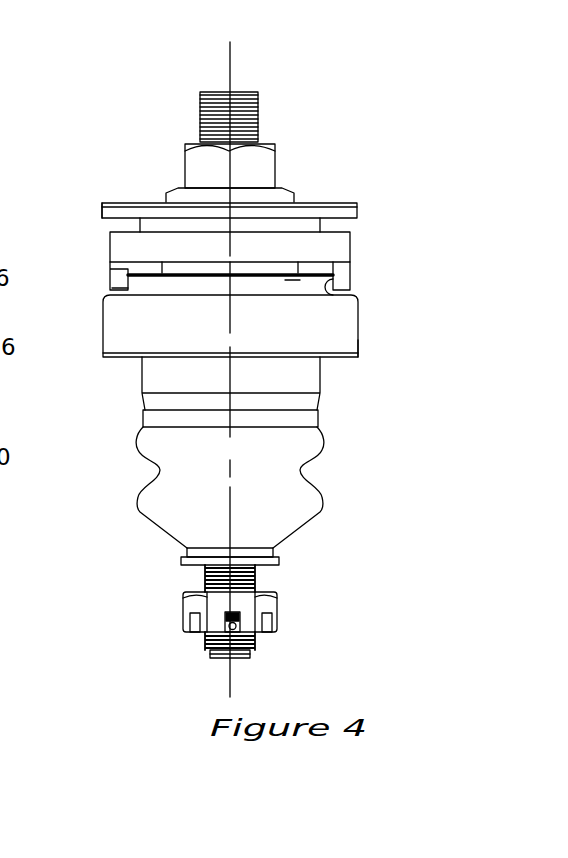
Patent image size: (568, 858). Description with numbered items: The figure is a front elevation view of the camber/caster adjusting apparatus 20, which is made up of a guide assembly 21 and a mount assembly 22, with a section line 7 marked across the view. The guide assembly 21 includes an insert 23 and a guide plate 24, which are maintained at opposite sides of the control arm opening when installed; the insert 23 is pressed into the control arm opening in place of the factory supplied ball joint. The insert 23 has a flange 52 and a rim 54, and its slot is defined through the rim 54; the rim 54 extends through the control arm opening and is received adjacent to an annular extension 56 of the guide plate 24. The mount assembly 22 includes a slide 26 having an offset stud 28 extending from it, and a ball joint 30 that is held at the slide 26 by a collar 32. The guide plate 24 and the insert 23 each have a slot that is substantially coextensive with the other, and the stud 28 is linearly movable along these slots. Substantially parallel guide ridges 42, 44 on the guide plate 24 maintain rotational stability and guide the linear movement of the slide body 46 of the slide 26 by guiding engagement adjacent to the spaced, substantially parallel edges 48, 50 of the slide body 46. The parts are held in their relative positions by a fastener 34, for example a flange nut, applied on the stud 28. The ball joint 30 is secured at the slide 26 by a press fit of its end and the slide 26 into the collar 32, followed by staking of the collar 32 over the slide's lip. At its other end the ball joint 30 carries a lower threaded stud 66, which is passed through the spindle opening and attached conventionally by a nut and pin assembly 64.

The section line 7- 7 is at (181, 697).
The camber/caster adjusting apparatus 20 is at (158, 135).
The guide assembly 21 is at (355, 158).
The mount assembly 22 is at (347, 410).
The insert 23 is at (110, 204).
The guide plate 24 is at (110, 232).
The slide 26 is at (157, 287).
The offset stud 28 is at (258, 118).
The ball joint 30 is at (147, 382).
The collar 32 is at (352, 345).
The fastener 34 is at (275, 156).
The guide ridge 42 is at (350, 262).
The guide ridge 44 is at (130, 273).
The slide body 46 is at (290, 283).
The edge of slide body 48 is at (333, 286).
The edge of slide body 50 is at (112, 293).
The flange 52 is at (138, 205).
The rim 54 is at (322, 224).
The annular extension 56 is at (110, 252).
The nut and pin assembly 64 is at (280, 612).
The lower threaded stud 66 is at (252, 655).